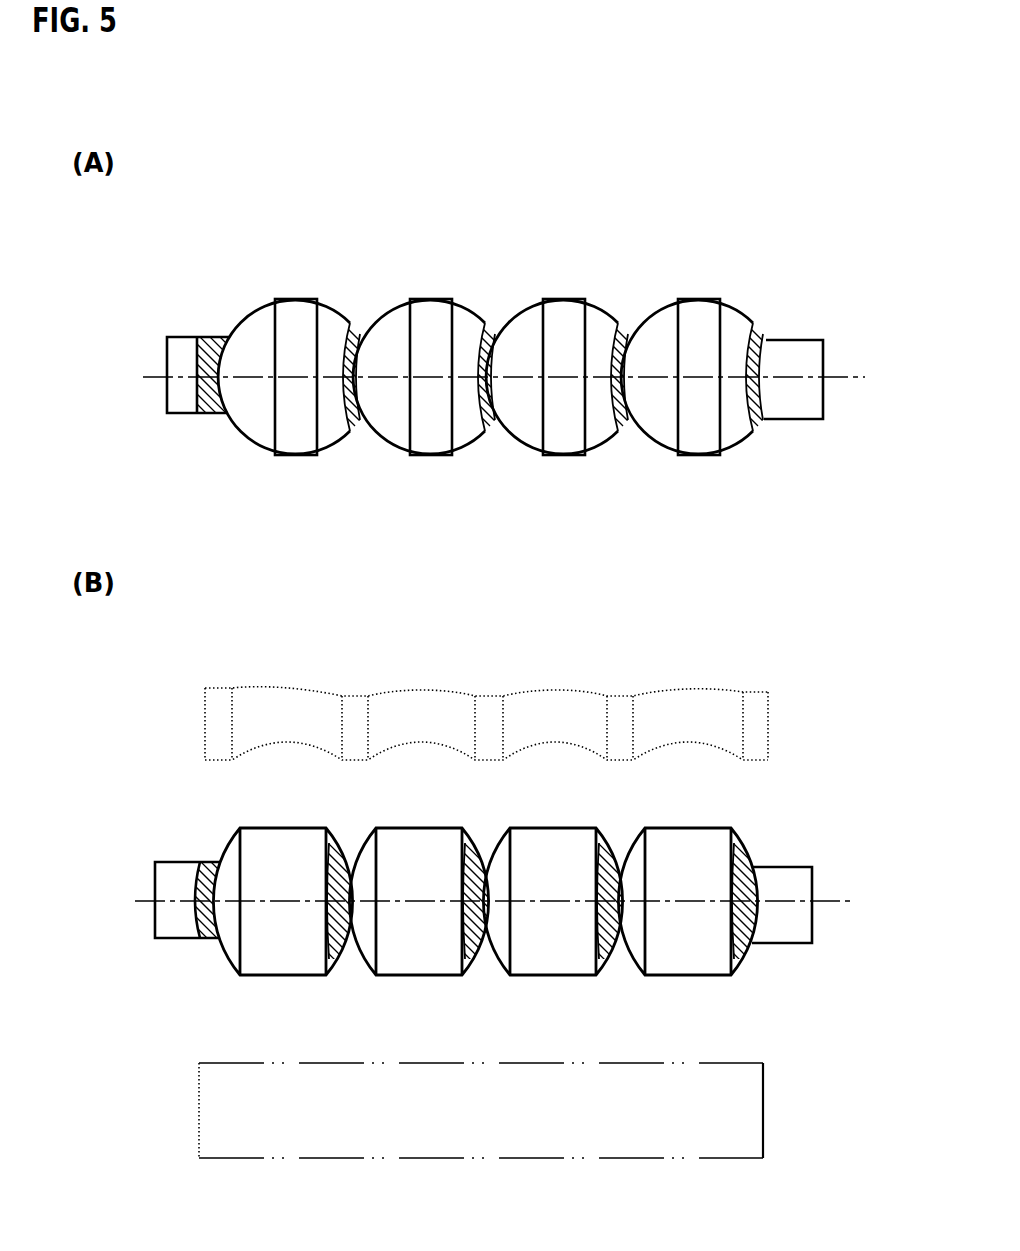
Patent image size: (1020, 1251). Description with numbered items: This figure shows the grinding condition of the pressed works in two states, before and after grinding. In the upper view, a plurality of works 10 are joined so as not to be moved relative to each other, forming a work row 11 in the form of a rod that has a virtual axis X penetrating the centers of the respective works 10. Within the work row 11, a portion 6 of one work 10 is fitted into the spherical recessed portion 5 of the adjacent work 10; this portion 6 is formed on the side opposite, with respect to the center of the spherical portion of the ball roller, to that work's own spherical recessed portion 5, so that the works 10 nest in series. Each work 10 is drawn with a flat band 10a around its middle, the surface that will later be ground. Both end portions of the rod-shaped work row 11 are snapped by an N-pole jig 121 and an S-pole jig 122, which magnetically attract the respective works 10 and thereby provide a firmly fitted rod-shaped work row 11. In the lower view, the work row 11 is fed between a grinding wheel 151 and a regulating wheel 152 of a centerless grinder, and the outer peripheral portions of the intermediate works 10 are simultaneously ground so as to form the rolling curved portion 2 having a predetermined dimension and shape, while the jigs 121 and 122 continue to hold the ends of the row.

The rolling curved portion 2 is at (267, 827).
The spherical recessed portion 5 is at (370, 423).
The portion of adjacent work 6 is at (346, 334).
The work 10 is at (336, 250).
The flat band of bead 10a is at (302, 298).
The work row 11 is at (818, 210).
The N-pole jig 121 is at (200, 337).
The S-pole jig 122 is at (795, 340).
The grinding wheel 151 is at (768, 750).
The regulating wheel 152 is at (763, 1118).
The virtual axis X is at (836, 380).